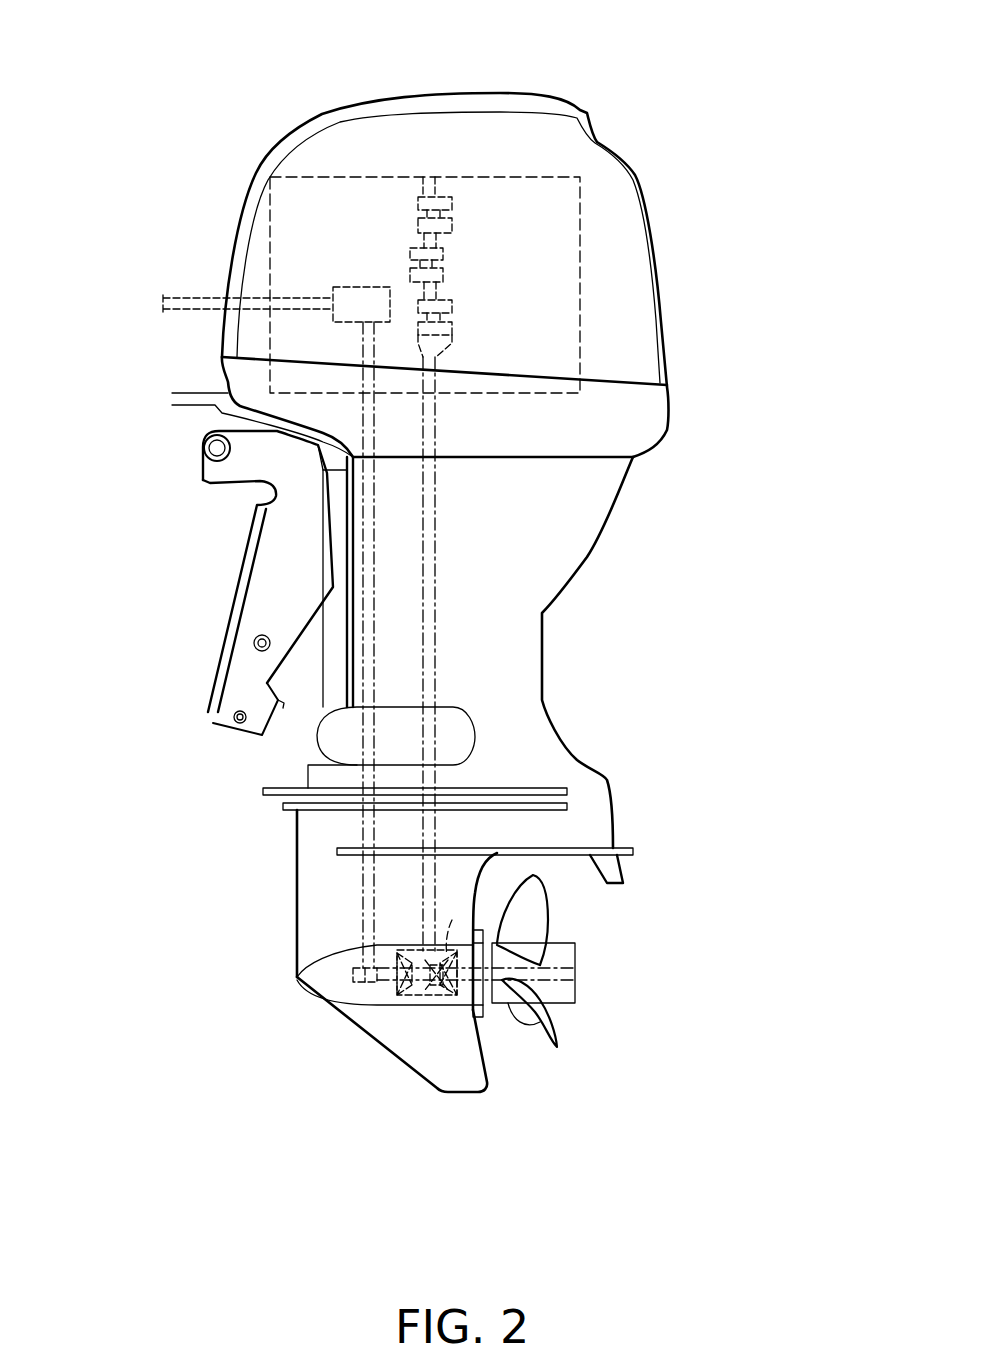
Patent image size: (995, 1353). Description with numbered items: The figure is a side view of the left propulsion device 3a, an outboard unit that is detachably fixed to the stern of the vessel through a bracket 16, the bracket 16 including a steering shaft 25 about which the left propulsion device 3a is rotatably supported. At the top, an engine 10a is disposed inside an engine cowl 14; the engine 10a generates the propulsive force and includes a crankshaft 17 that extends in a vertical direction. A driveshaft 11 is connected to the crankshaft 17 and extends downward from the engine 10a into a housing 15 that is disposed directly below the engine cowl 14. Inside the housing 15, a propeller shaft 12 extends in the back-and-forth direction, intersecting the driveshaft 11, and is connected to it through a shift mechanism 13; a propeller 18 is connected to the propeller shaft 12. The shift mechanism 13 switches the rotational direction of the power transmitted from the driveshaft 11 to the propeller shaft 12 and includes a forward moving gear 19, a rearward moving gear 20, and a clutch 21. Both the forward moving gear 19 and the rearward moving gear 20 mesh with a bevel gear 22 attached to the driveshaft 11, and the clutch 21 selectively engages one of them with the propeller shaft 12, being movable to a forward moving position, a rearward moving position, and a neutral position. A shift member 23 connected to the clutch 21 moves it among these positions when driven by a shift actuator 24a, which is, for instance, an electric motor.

The left propulsion device 3a is at (237, 98).
The shift actuator 24a is at (350, 287).
The engine cowl 14 is at (643, 188).
The engine 10a is at (270, 247).
The crankshaft 17 is at (440, 262).
The bracket 16 is at (277, 535).
The driveshaft 11 is at (433, 570).
The housing 15 is at (520, 630).
The steering shaft 25 is at (330, 663).
The shift member 23 is at (360, 875).
The bevel gear 22 is at (452, 920).
The shift mechanism 13 is at (377, 997).
The forward moving gear 19 is at (407, 997).
The rearward moving gear 20 is at (428, 987).
The clutch 21 is at (423, 1007).
The propeller shaft 12 is at (483, 987).
The propeller 18 is at (518, 1012).